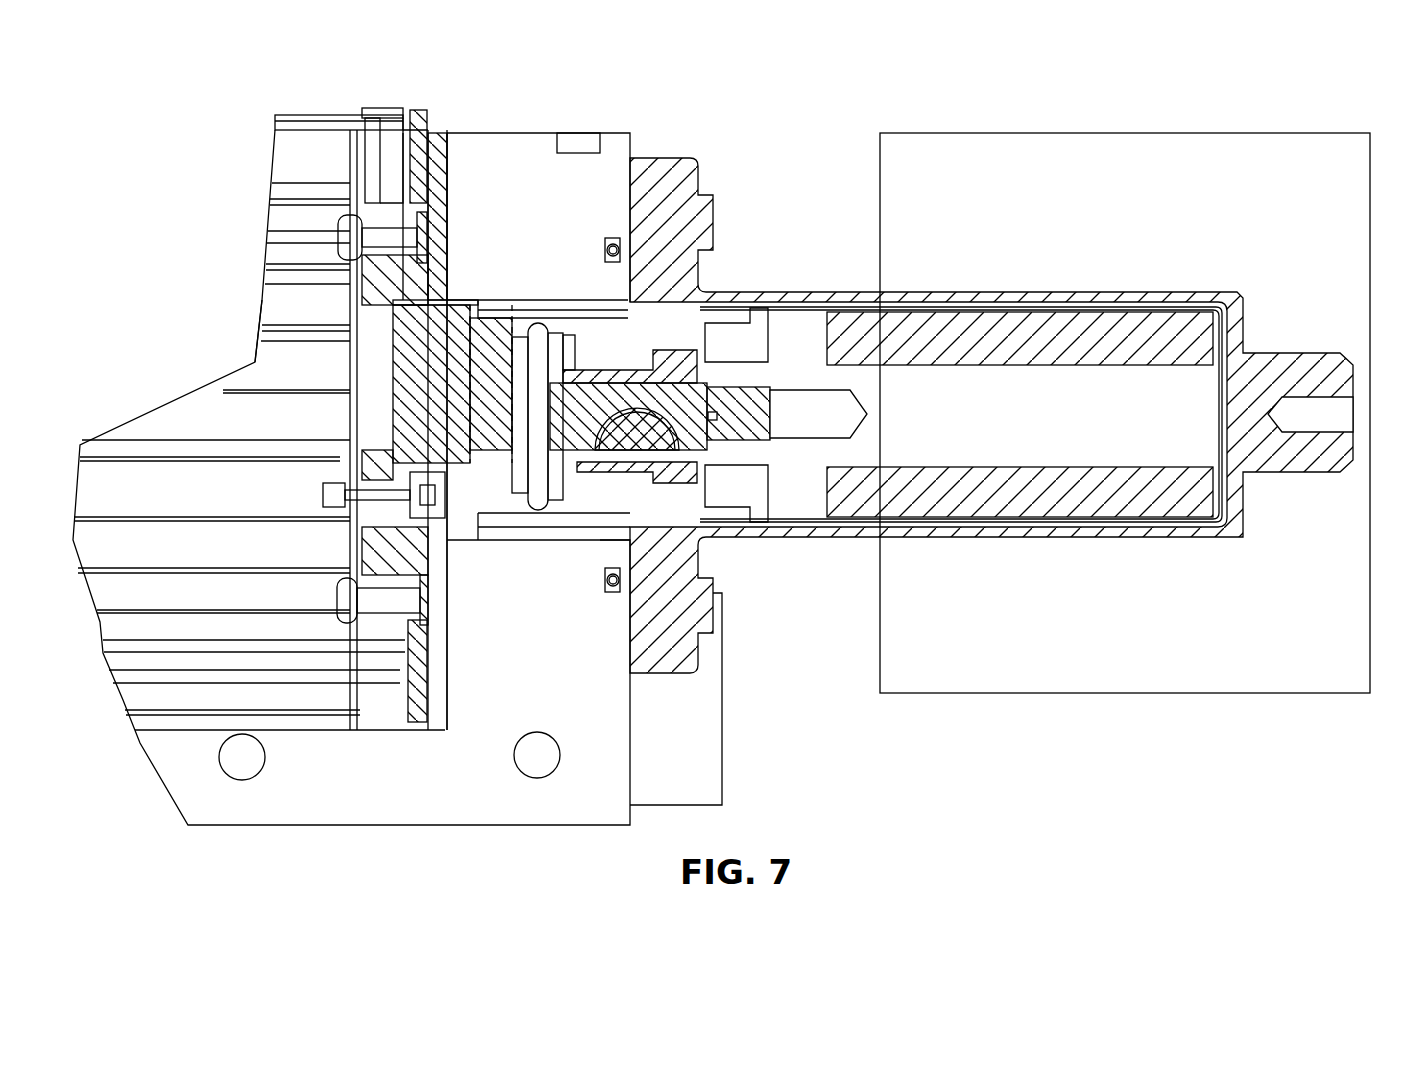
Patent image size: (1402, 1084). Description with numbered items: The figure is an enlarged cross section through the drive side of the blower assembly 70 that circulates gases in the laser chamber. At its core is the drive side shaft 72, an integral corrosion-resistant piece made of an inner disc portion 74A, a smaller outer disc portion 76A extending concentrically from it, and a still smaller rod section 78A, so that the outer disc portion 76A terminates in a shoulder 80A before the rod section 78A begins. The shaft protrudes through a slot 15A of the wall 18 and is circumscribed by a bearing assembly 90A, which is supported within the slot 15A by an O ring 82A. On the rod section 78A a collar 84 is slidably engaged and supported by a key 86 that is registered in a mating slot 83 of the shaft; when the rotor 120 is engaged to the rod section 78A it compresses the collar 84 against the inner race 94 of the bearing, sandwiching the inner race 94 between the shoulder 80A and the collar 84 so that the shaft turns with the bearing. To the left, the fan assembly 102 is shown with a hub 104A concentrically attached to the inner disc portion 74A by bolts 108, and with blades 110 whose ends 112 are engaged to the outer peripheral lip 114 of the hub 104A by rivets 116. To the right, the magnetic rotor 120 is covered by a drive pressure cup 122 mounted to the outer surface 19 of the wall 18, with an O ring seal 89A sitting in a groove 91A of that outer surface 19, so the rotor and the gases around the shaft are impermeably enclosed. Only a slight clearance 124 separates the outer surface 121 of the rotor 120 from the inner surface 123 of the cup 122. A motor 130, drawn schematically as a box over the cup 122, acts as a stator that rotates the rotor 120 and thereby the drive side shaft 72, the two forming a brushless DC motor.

The slot 15A is at (612, 540).
The wall 18 is at (587, 762).
The outer surface 19 is at (645, 660).
The blower assembly 70 is at (230, 245).
The drive side shaft 72 is at (440, 360).
The inner disc portion 74A is at (448, 440).
The outer disc portion 76A is at (495, 442).
The rod section 78A is at (570, 442).
The shoulder 80A is at (520, 360).
The O ring 82A is at (552, 362).
The mating slot 83 is at (680, 408).
The collar 84 is at (677, 362).
The key 86 is at (652, 447).
The O ring seal 89A is at (611, 242).
The bearing assembly 90A is at (567, 350).
The groove 91A is at (622, 242).
The inner race 94 is at (538, 330).
The fan assembly 102 is at (330, 108).
The hub 104A is at (372, 285).
The bolts 108 is at (328, 497).
The blades 110 is at (295, 160).
The ends 112 is at (385, 150).
The outer peripheral lip 114 is at (428, 122).
The rivets 116 is at (400, 235).
The rotor 120 is at (957, 383).
The outer surface 121 is at (880, 497).
The drive pressure cup 122 is at (690, 175).
The inner surface 123 is at (715, 533).
The clearance 124 is at (1097, 305).
The motor 130 is at (1185, 655).